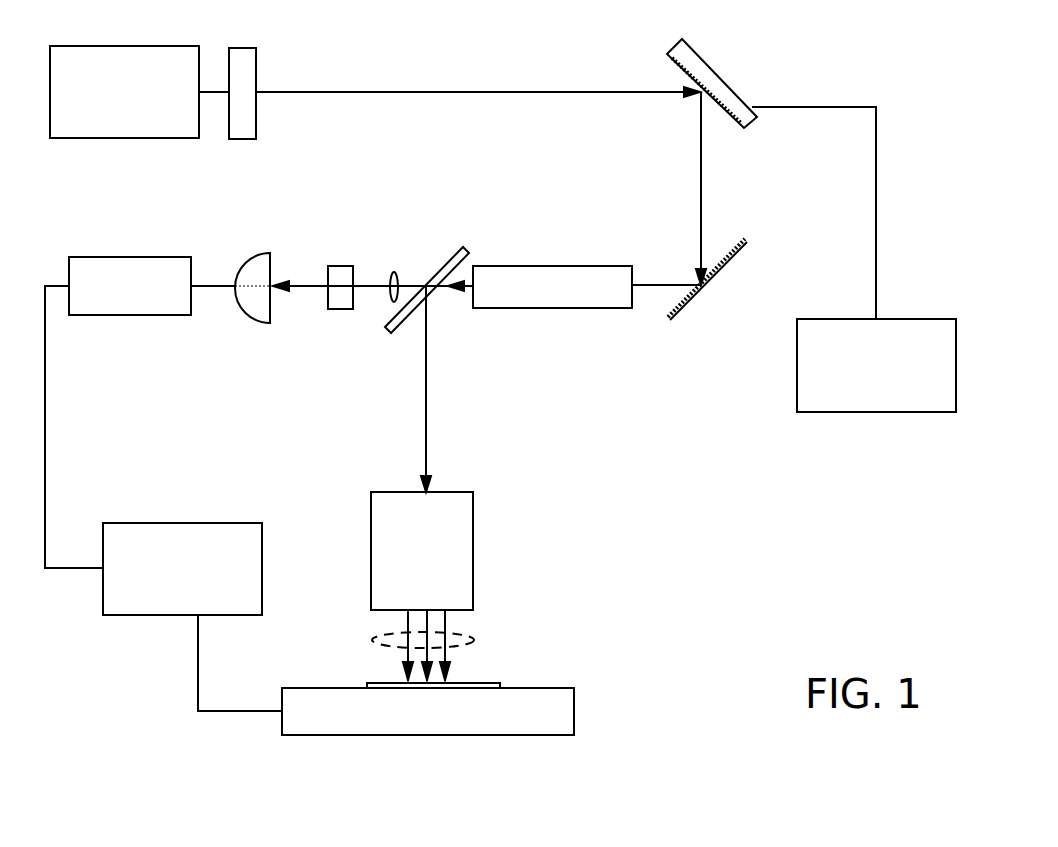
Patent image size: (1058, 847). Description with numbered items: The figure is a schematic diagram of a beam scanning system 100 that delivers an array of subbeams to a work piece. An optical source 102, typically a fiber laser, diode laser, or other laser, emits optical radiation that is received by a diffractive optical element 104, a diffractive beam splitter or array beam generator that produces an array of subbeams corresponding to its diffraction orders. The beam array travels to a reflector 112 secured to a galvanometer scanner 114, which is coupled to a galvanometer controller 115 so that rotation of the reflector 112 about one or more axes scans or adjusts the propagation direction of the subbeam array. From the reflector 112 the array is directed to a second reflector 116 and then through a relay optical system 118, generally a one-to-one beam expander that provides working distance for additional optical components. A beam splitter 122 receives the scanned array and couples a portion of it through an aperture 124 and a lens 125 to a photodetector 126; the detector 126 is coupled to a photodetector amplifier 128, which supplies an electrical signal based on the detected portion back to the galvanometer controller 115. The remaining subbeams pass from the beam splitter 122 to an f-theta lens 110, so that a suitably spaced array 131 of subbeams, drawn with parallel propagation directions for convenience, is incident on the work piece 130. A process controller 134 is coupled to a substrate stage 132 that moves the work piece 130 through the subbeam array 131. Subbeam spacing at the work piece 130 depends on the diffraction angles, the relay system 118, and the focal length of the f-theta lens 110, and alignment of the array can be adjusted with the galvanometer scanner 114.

The beam scanning system 100 is at (720, 511).
The optical source 102 is at (124, 92).
The diffractive optical element 104 is at (248, 57).
The f-theta lens 110 is at (473, 568).
The reflector 112 is at (730, 122).
The galvanometer scanner 114 is at (700, 52).
The galvanometer controller 115 is at (876, 365).
The reflector 116 is at (673, 323).
The relay optical system 118 is at (530, 308).
The beam splitter 122 is at (463, 247).
The aperture 124 is at (333, 265).
The lens 125 is at (393, 267).
The photodetector 126 is at (270, 323).
The photodetector amplifier 128 is at (130, 286).
The work piece 130 is at (367, 684).
The array of subbeams 131 is at (475, 635).
The substrate stage 132 is at (428, 711).
The process controller 134 is at (182, 569).